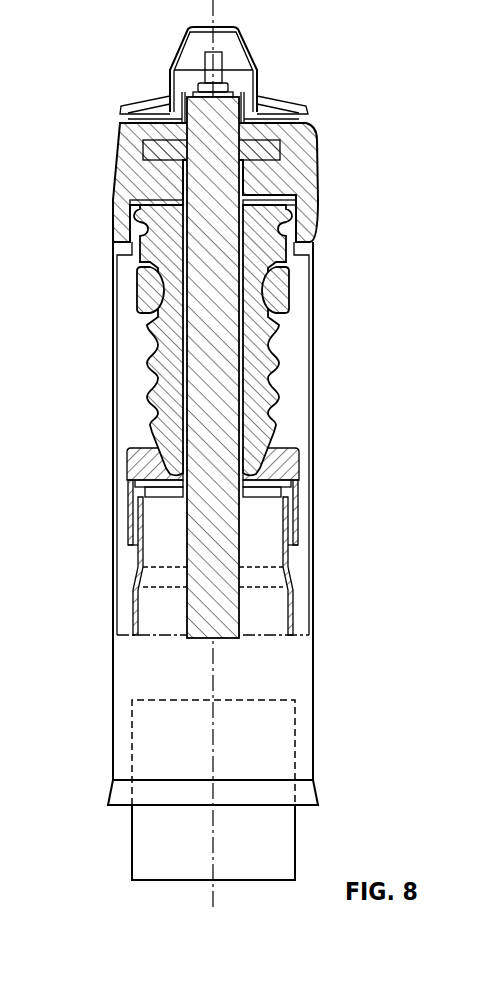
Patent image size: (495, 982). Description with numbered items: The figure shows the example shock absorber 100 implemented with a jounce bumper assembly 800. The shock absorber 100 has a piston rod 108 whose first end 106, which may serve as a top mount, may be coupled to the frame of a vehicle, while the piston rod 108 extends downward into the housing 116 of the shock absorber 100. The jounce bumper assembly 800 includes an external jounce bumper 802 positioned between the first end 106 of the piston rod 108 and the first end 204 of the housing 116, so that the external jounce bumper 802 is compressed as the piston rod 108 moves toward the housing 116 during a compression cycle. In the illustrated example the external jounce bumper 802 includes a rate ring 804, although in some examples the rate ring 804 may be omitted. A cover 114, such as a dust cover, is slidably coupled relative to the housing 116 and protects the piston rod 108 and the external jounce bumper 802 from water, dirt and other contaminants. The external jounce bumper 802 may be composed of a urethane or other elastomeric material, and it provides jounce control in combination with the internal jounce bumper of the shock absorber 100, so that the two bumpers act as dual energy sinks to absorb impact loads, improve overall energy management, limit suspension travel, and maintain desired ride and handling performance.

The shock absorber 100 is at (130, 822).
The first end of the piston rod 106 is at (204, 62).
The piston rod 108 is at (222, 265).
The cover 114 is at (116, 694).
The housing 116 is at (130, 856).
The first end of the housing 204 is at (262, 700).
The jounce bumper assembly 800 is at (230, 340).
The external jounce bumper 802 is at (150, 333).
The rate ring 804 is at (276, 292).